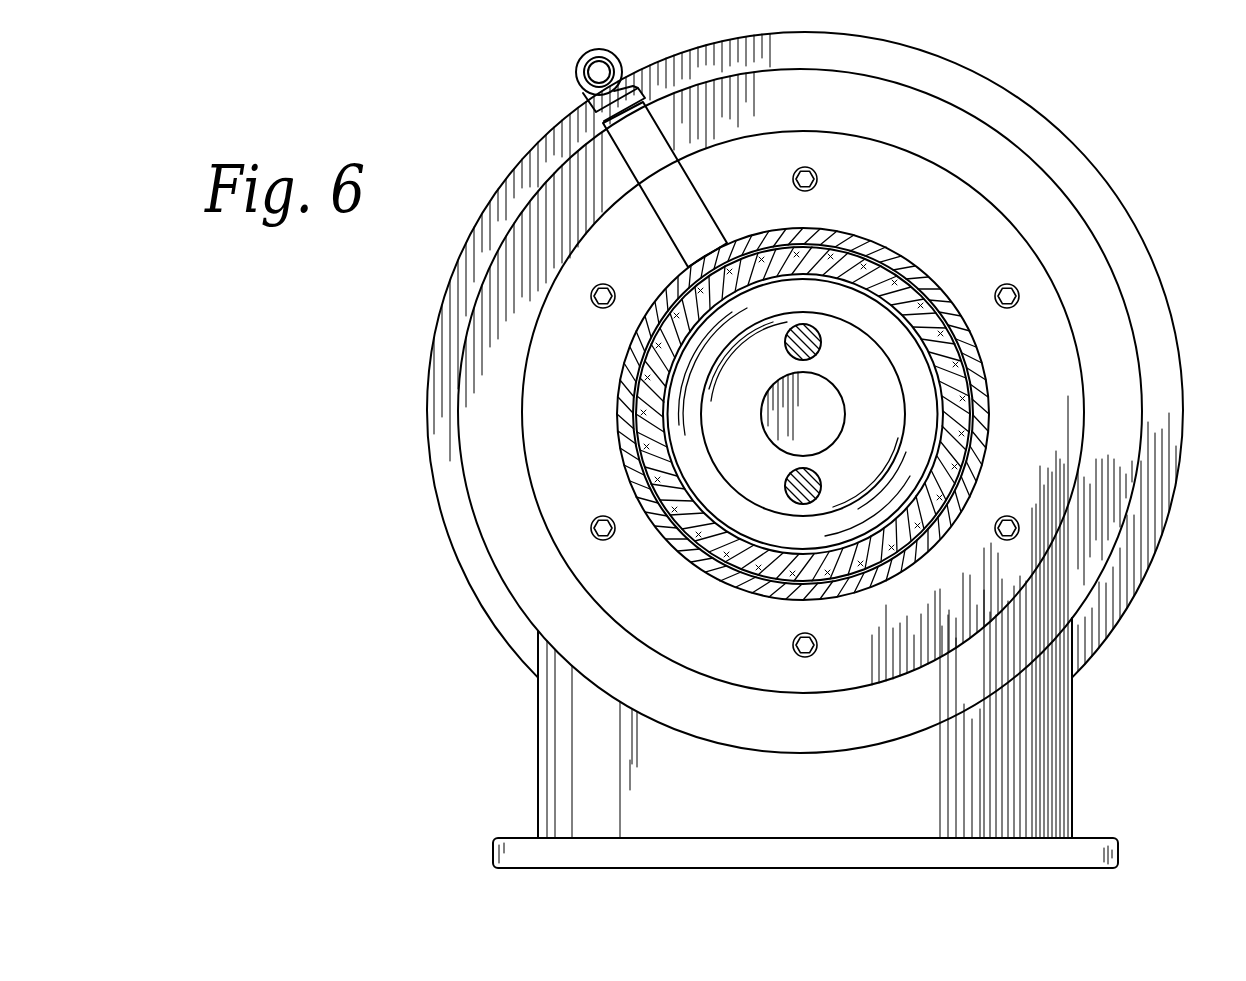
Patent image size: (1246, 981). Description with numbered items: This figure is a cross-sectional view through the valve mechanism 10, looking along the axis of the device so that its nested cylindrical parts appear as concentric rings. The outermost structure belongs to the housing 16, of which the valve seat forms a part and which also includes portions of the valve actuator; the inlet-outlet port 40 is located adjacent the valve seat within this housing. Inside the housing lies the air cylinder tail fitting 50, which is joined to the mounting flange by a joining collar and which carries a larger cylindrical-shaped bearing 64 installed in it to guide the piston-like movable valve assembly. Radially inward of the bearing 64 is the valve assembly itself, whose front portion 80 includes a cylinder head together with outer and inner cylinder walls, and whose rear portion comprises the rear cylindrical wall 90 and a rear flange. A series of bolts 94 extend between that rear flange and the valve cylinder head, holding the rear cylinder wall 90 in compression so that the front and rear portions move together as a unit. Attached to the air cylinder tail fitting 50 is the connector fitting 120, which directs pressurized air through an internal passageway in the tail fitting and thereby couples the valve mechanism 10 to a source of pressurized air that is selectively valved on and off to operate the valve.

The valve mechanism 10 is at (1106, 121).
The housing 16 is at (1095, 838).
The inlet-outlet port 40 is at (1040, 737).
The air cylinder tail fitting 50 is at (882, 253).
The cylindrical bearing 64 is at (915, 287).
The front portion 80 is at (833, 418).
The rear cylindrical wall 90 is at (913, 310).
The bolts 94 is at (817, 352).
The connector fitting 120 is at (577, 64).